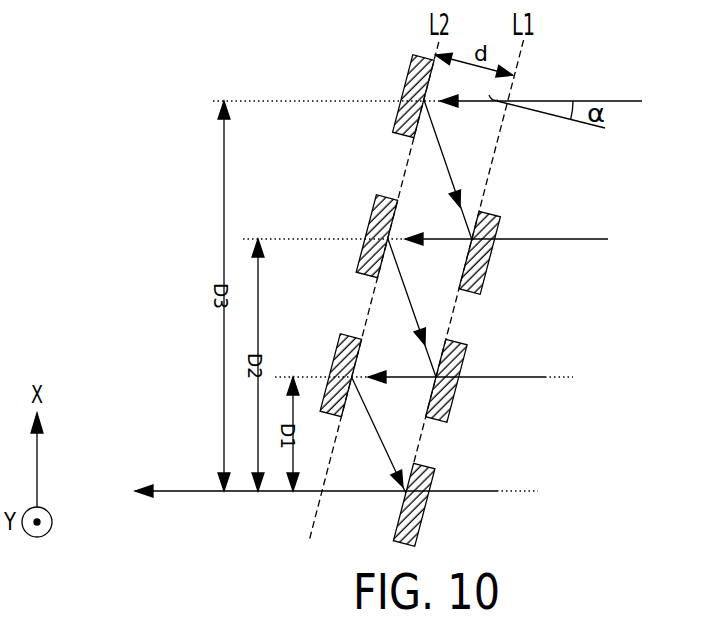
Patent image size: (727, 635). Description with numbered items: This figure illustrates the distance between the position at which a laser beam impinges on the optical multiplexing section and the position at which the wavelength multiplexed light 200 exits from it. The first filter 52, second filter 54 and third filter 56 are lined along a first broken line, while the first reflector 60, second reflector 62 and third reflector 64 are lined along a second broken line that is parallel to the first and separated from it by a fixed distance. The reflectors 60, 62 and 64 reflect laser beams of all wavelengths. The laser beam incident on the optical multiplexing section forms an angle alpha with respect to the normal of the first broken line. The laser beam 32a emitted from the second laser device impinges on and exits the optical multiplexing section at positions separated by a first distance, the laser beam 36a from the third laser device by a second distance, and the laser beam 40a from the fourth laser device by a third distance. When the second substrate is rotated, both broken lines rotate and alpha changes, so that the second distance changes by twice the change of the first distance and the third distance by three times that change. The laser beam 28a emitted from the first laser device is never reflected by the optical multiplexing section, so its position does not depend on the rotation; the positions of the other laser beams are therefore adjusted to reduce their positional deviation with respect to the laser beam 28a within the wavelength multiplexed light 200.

The third reflector 64 is at (420, 54).
The second reflector 62 is at (378, 194).
The first reflector 60 is at (341, 334).
The third filter 56 is at (487, 212).
The second filter 54 is at (454, 340).
The first filter 52 is at (424, 466).
The laser beam 40a is at (622, 101).
The laser beam 36a is at (588, 239).
The laser beam 32a is at (548, 377).
The laser beam 28a is at (532, 491).
The wavelength multiplexed light 200 is at (182, 491).